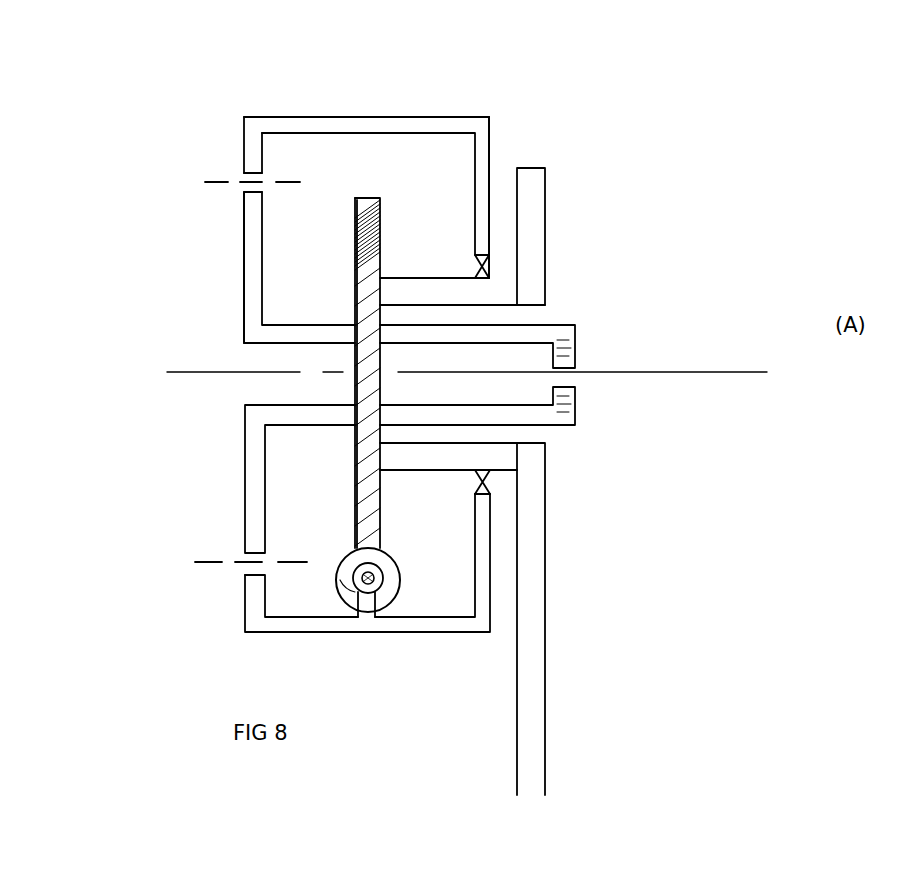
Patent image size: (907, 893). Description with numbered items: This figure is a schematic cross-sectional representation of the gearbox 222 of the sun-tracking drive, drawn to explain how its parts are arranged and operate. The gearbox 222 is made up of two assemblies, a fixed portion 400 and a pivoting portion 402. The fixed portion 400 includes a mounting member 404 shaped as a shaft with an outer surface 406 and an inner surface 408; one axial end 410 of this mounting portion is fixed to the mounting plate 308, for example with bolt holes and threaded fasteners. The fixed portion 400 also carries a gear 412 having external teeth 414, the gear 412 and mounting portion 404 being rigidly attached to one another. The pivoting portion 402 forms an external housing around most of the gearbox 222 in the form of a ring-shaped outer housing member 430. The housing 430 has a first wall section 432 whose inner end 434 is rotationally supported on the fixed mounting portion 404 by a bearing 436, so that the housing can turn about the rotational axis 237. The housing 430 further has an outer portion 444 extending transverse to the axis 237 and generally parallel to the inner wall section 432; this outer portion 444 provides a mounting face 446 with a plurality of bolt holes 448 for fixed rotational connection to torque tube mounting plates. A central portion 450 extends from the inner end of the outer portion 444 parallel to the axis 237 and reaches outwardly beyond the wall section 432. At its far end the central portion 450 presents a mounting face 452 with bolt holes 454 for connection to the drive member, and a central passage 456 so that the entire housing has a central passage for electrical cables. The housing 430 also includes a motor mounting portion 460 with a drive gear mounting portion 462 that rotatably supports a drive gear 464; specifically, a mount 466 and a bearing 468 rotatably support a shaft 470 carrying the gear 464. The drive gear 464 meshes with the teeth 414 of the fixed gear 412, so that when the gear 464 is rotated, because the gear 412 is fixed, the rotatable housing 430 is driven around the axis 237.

The gearbox 222 is at (352, 52).
The outer housing member 430 is at (477, 106).
The first wall section 432 is at (506, 164).
The mounting plate 308 is at (584, 175).
The mounting face 446 is at (232, 157).
The bolt holes 448 is at (240, 192).
The pivoting portion 402 is at (222, 242).
The outer portion 444 is at (187, 288).
The gear 412 is at (356, 188).
The external teeth 414 is at (389, 195).
The fixed portion 400 is at (425, 214).
The mounting member 404 is at (458, 270).
The inner end 434 is at (500, 250).
The bearing 436 is at (495, 267).
The inner surface 408 is at (505, 312).
The central passage 456 is at (580, 368).
The bolt holes 454 is at (577, 343).
The axis 237 is at (747, 371).
The mounting face 452 is at (580, 413).
The axial end 410 is at (515, 442).
The central portion 450 is at (267, 400).
The outer surface 406 is at (453, 484).
The shaft 470 is at (363, 576).
The drive gear 464 is at (396, 556).
The drive gear mounting portion 462 is at (441, 572).
The bearing 468 is at (337, 578).
The mount 466 is at (380, 611).
The motor mounting portion 460 is at (300, 648).